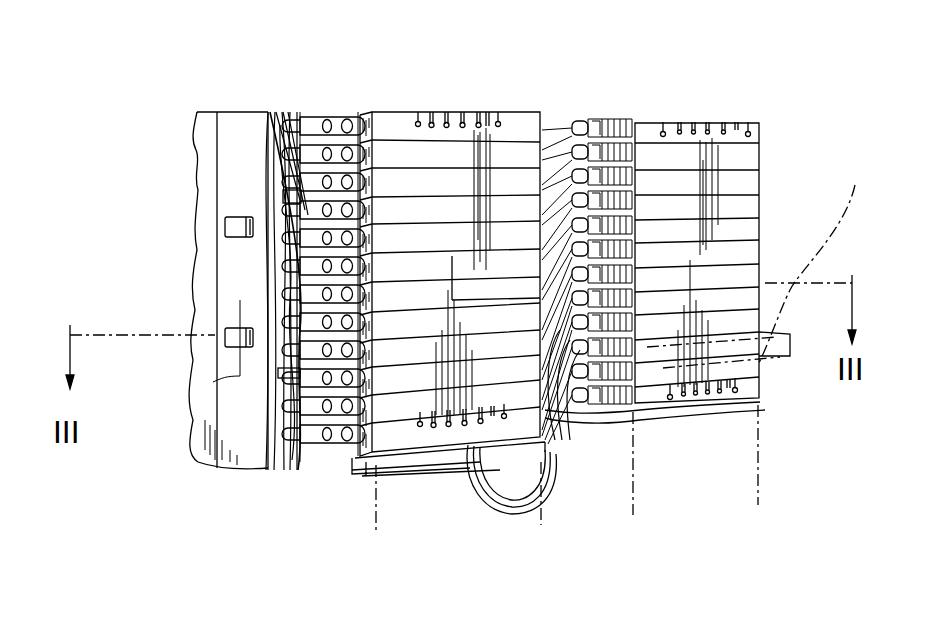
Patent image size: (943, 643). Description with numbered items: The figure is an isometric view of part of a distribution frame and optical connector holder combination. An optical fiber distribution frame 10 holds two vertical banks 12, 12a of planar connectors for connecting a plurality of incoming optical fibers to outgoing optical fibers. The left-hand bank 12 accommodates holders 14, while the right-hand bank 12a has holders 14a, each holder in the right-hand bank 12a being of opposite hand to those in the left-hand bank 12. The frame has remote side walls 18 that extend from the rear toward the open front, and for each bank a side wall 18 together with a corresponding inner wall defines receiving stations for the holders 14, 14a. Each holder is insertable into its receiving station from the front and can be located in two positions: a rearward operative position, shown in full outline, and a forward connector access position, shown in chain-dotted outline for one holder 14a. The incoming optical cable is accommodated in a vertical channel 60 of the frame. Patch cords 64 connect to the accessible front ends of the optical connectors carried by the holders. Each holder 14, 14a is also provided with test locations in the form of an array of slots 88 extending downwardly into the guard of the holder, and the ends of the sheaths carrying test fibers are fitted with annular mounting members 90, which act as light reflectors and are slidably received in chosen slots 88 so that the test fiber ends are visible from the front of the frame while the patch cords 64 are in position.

The optical fiber distribution frame 10 is at (174, 312).
The left-hand bank 12 is at (540, 526).
The right-hand bank 12a is at (757, 496).
The holder 14 is at (413, 160).
The holder 14a is at (760, 198).
The side wall 18 is at (196, 252).
The vertical channel 60 is at (220, 377).
The patch cords 64 is at (482, 480).
The slots 88 is at (478, 114).
The annular mounting member 90 is at (418, 113).